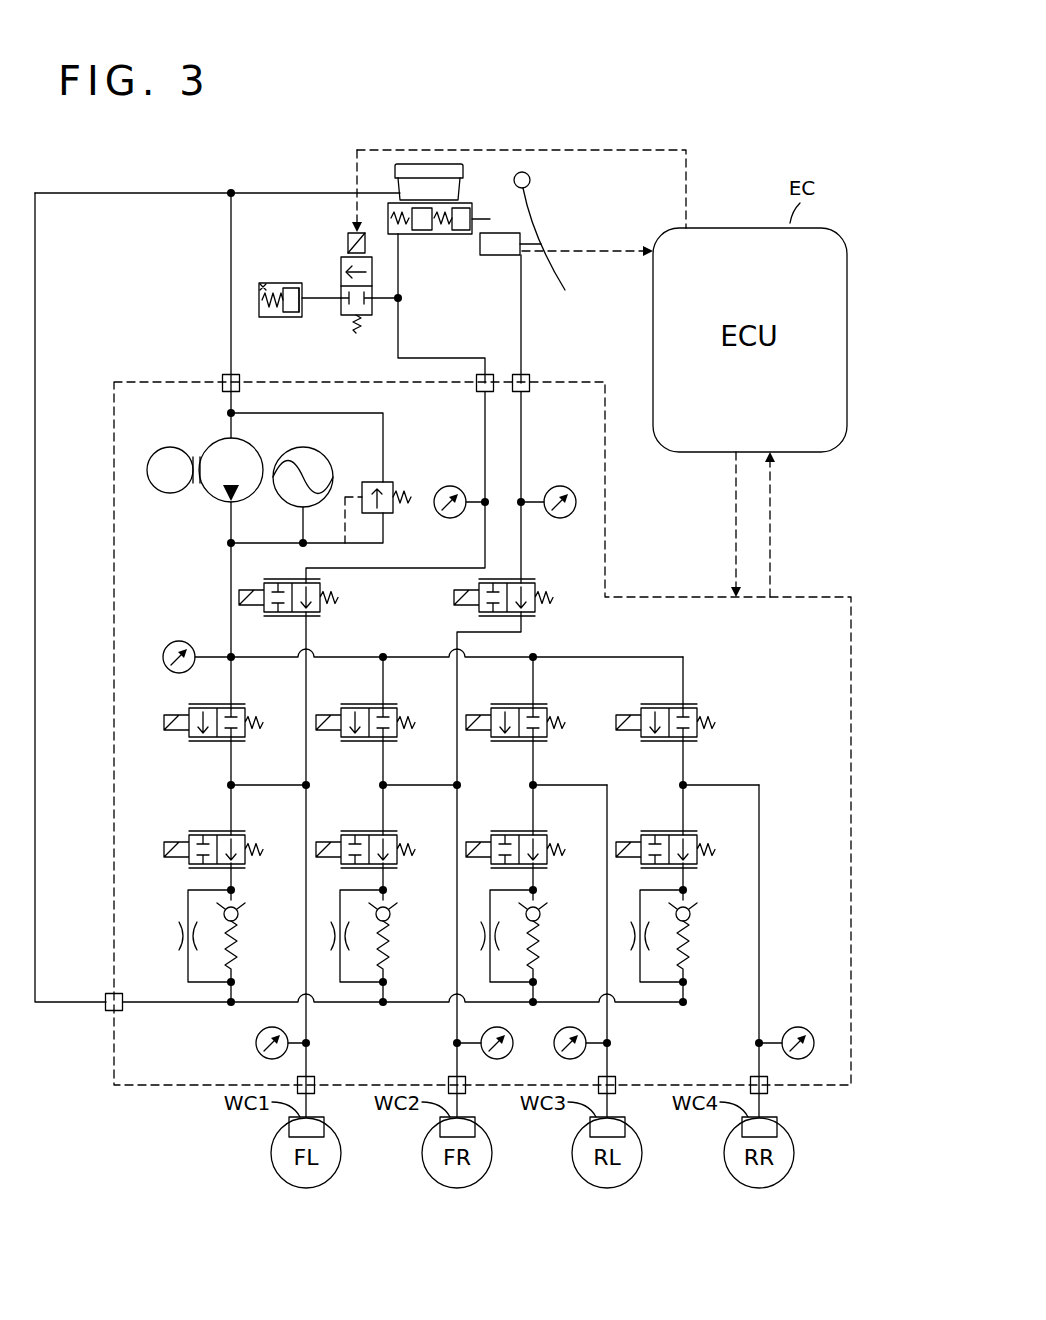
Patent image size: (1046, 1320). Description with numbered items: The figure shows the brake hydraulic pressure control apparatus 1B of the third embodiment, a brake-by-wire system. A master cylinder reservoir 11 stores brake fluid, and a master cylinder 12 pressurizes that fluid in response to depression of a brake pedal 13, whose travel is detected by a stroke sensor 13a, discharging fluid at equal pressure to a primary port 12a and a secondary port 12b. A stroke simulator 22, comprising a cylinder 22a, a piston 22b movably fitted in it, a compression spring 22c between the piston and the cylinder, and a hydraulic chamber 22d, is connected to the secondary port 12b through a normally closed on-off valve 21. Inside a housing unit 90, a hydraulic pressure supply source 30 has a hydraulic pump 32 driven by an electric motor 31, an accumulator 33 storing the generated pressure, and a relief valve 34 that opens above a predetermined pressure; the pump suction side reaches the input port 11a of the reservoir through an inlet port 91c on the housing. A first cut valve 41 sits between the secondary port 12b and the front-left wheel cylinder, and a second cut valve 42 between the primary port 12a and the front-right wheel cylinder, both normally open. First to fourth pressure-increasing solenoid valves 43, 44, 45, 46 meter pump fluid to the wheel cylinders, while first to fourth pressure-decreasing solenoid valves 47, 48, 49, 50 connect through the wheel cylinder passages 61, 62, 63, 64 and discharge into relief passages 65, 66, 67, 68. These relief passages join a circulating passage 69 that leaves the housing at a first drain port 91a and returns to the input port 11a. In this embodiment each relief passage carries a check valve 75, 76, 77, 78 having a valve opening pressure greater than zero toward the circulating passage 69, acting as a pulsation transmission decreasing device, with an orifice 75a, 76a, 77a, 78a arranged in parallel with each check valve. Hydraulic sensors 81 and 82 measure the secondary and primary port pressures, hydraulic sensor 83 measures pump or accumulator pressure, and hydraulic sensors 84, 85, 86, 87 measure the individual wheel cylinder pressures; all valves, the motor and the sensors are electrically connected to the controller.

The brake hydraulic pressure control apparatus 1B is at (737, 140).
The master cylinder reservoir 11 is at (430, 165).
The input port 11a is at (397, 196).
The master cylinder 12 is at (470, 205).
The primary port 12a is at (443, 236).
The secondary port 12b is at (398, 236).
The brake pedal 13 is at (540, 224).
The stroke sensor 13a is at (495, 257).
The on-off valve 21 is at (346, 235).
The stroke simulator 22 is at (272, 280).
The cylinder 22a is at (262, 290).
The piston 22b is at (290, 312).
The compression spring 22c is at (262, 300).
The hydraulic chamber 22d is at (297, 288).
The hydraulic pressure supply source 30 is at (197, 511).
The electric motor 31 is at (147, 470).
The hydraulic pump 32 is at (252, 447).
The accumulator 33 is at (325, 462).
The relief valve 34 is at (392, 482).
The first cut valve 41 is at (312, 615).
The second cut valve 42 is at (533, 581).
The first pressure-increasing solenoid valve 43 is at (240, 705).
The second pressure-increasing solenoid valve 44 is at (391, 705).
The third pressure-increasing solenoid valve 45 is at (540, 705).
The fourth pressure-increasing solenoid valve 46 is at (690, 705).
The first pressure-decreasing solenoid valve 47 is at (209, 834).
The second pressure-decreasing solenoid valve 48 is at (362, 834).
The third pressure-decreasing solenoid valve 49 is at (512, 834).
The fourth pressure-decreasing solenoid valve 50 is at (662, 834).
The first wheel cylinder passage 61 is at (268, 784).
The second wheel cylinder passage 62 is at (419, 784).
The third wheel cylinder passage 63 is at (566, 784).
The fourth wheel cylinder passage 64 is at (722, 784).
The first relief passage 65 is at (236, 880).
The second relief passage 66 is at (390, 880).
The third relief passage 67 is at (536, 882).
The fourth relief passage 68 is at (686, 882).
The circulating passage 69 is at (42, 578).
The first check valve 75 is at (250, 938).
The orifice 75a is at (176, 943).
The second check valve 76 is at (398, 938).
The orifice 76a is at (352, 966).
The third check valve 77 is at (546, 938).
The orifice 77a is at (478, 943).
The fourth check valve 78 is at (698, 939).
The orifice 78a is at (654, 962).
The hydraulic sensor 81 is at (452, 486).
The hydraulic sensor 82 is at (555, 486).
The hydraulic sensor 83 is at (180, 641).
The hydraulic sensor 84 is at (256, 1040).
The hydraulic sensor 85 is at (506, 1028).
The hydraulic sensor 86 is at (565, 1056).
The hydraulic sensor 87 is at (808, 1028).
The housing unit 90 is at (124, 381).
The first drain port 91a is at (105, 994).
The inlet port 91c is at (222, 374).